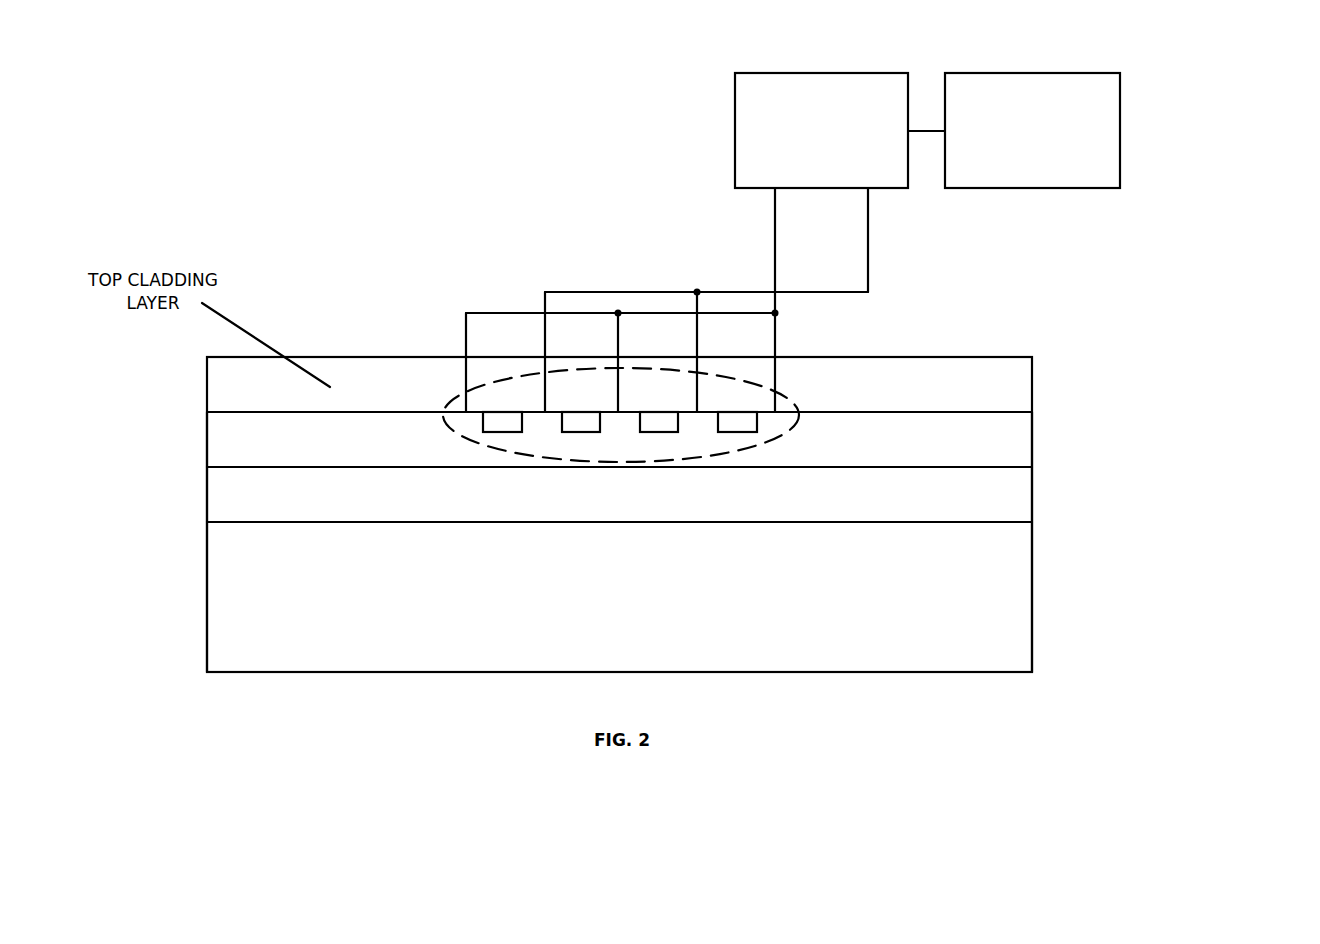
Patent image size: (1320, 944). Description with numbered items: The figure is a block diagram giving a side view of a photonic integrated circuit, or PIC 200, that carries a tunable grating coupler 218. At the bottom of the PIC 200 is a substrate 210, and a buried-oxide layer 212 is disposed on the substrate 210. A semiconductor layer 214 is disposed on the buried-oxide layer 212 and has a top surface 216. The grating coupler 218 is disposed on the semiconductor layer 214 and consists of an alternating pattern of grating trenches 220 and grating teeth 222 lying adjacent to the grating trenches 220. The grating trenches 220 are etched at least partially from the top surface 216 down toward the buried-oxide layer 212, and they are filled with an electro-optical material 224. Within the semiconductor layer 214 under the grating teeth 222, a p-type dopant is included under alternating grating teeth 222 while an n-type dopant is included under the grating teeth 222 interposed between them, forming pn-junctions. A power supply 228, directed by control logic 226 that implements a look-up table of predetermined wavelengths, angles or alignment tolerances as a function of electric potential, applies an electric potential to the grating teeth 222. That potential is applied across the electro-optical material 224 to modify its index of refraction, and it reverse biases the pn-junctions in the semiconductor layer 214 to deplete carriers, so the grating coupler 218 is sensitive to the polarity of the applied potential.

The photonic integrated circuit (PIC) 200 is at (224, 153).
The substrate 210 is at (619, 597).
The buried-oxide layer 212 is at (1003, 493).
The semiconductor layer 214 is at (1002, 439).
The top surface 216 is at (233, 412).
The grating coupler 218 is at (478, 442).
The grating trenches 220 is at (513, 432).
The grating teeth 222 is at (767, 412).
The electro-optical material 224 is at (738, 421).
The control logic 226 is at (1014, 130).
The power supply 228 is at (687, 242).